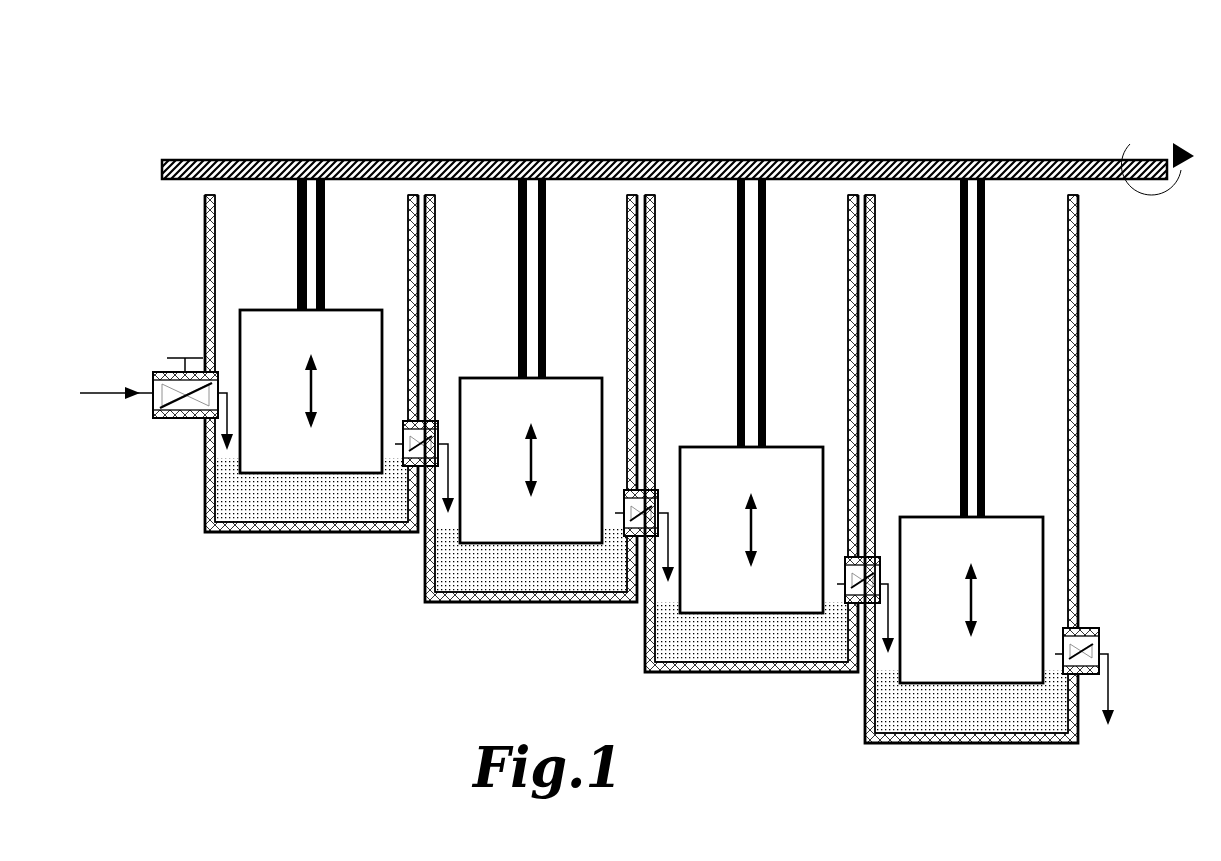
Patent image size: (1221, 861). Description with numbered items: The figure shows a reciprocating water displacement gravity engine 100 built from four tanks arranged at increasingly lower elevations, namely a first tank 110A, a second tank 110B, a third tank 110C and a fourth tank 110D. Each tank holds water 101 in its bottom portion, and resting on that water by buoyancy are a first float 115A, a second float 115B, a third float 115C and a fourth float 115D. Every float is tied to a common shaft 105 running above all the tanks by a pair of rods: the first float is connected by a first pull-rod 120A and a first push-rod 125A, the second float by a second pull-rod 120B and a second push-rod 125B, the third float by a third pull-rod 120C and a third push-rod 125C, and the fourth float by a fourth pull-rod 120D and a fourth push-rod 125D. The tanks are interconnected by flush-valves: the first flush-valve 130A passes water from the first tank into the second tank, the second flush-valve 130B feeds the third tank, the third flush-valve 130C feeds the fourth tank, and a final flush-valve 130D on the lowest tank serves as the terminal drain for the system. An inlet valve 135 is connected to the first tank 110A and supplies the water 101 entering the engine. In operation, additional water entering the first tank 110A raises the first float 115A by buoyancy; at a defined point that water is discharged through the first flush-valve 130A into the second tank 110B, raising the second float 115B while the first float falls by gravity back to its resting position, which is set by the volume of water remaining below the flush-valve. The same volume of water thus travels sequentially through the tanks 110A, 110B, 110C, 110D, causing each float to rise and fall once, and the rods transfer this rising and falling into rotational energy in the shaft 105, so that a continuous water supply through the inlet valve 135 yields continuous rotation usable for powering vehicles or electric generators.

The reciprocating water displacement gravity engine 100 is at (993, 100).
The shaft 105 is at (162, 172).
The water 101 is at (318, 500).
The first tank 110A is at (205, 512).
The second tank 110B is at (425, 575).
The third tank 110C is at (645, 655).
The fourth tank 110D is at (865, 727).
The first float 115A is at (257, 470).
The second float 115B is at (470, 540).
The third float 115C is at (694, 612).
The fourth float 115D is at (908, 680).
The first pull-rod 120A is at (297, 213).
The second pull-rod 120B is at (518, 231).
The third pull-rod 120C is at (737, 247).
The fourth pull-rod 120D is at (960, 263).
The first push-rod 125A is at (325, 203).
The second push-rod 125B is at (546, 222).
The third push-rod 125C is at (766, 240).
The fourth push-rod 125D is at (985, 255).
The first flush-valve 130A is at (398, 467).
The second flush-valve 130B is at (622, 540).
The third flush-valve 130C is at (842, 608).
The final flush-valve 130D is at (1096, 628).
The inlet valve 135 is at (155, 419).